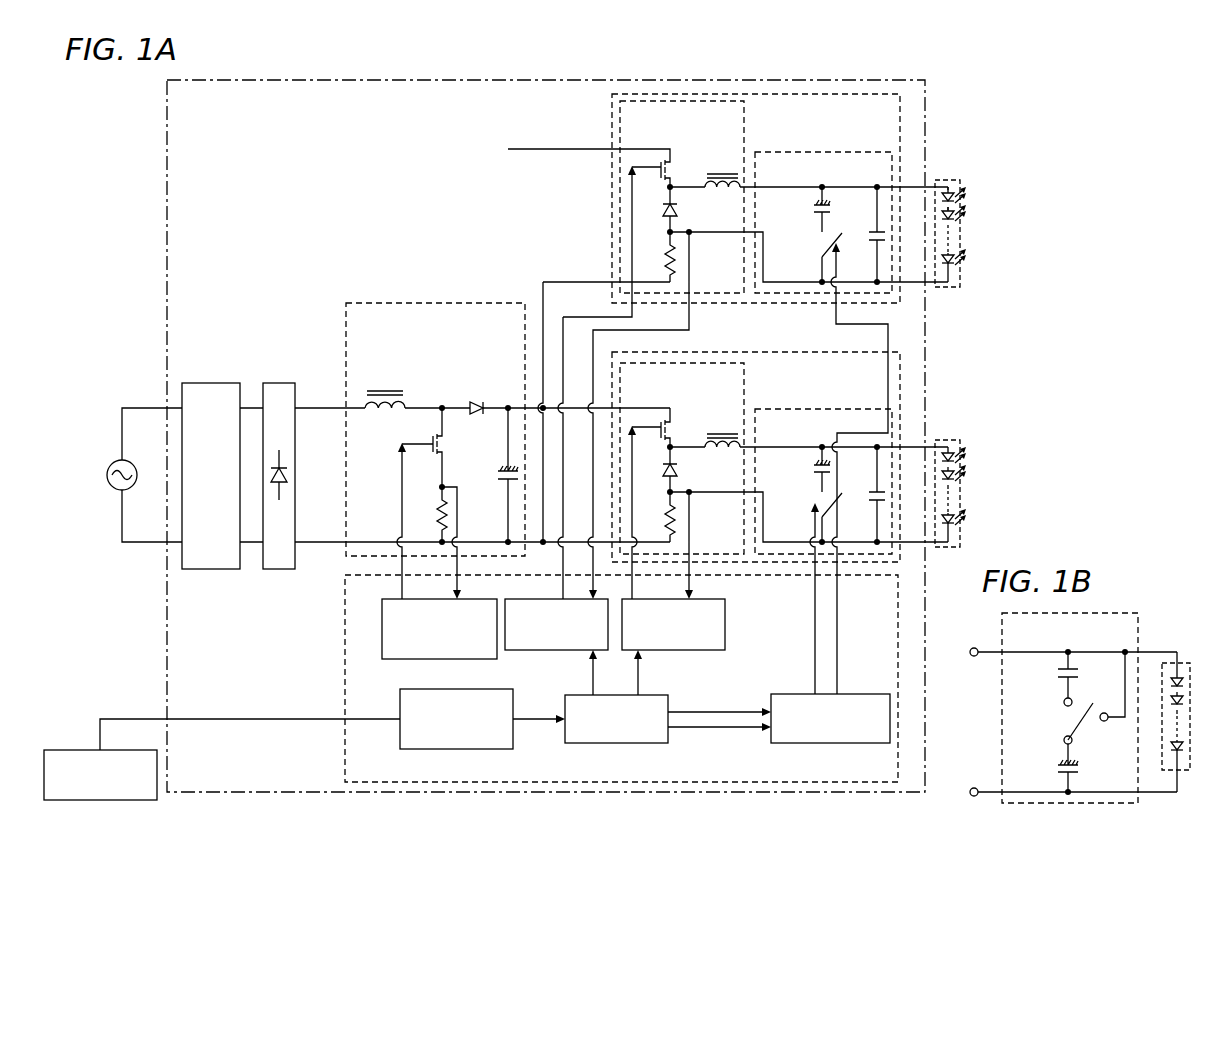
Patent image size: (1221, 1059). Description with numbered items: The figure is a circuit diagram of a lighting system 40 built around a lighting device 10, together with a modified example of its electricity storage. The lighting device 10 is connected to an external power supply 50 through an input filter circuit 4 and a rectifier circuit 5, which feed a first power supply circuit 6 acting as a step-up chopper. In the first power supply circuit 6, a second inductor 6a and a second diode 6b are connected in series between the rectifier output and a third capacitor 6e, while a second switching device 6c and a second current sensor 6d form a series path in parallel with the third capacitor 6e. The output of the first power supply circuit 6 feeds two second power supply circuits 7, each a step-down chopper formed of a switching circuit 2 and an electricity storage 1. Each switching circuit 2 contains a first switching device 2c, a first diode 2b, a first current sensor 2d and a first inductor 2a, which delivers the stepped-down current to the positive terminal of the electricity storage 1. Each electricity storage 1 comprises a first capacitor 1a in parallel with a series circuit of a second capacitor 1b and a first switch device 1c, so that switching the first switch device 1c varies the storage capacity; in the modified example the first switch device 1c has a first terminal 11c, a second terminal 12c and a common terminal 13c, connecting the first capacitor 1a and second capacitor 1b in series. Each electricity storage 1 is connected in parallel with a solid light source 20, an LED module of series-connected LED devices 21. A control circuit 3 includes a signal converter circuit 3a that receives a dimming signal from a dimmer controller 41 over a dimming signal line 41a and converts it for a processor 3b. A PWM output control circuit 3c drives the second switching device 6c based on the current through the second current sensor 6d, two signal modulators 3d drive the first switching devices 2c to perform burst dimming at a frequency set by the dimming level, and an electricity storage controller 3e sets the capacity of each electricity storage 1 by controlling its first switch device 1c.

In FIG. 1A, the lighting device 10 is at (553, 78).
In FIG. 1A, the lighting system 40 is at (955, 97).
In FIG. 1A, the external power supply 50 is at (114, 462).
In FIG. 1A, the input filter circuit 4 is at (216, 383).
In FIG. 1A, the rectifier circuit 5 is at (279, 383).
In FIG. 1A, the first power supply circuit 6 is at (428, 302).
In FIG. 1A, the second inductor 6a is at (385, 388).
In FIG. 1A, the second diode 6b is at (475, 394).
In FIG. 1A, the second switching device 6c is at (434, 503).
In FIG. 1A, the second current sensor 6d is at (437, 541).
In FIG. 1A, the third capacitor 6e is at (498, 475).
In FIG. 1A, the second power supply circuit 7 is at (812, 94).
In FIG. 1A, the switching circuit 2 is at (688, 94).
In FIG. 1A, the first inductor 2a is at (722, 300).
In FIG. 1A, the first diode 2b is at (660, 339).
In FIG. 1A, the first switching device 2c is at (603, 374).
In FIG. 1A, the first current sensor 2d is at (659, 387).
In FIG. 1A, the electricity storage 1 is at (893, 156).
In FIG. 1B, the electricity storage 1 is at (1126, 612).
In FIG. 1A, the first capacitor 1a is at (868, 364).
In FIG. 1B, the first capacitor 1a is at (1055, 675).
In FIG. 1A, the second capacitor 1b is at (808, 339).
In FIG. 1B, the second capacitor 1b is at (1055, 768).
In FIG. 1A, the first switch device 1c is at (842, 463).
In FIG. 1B, the first switch device 1c is at (1067, 721).
In FIG. 1B, the first terminal 11c is at (1063, 703).
In FIG. 1B, the second terminal 12c is at (1104, 722).
In FIG. 1B, the common terminal 13c is at (1063, 741).
In FIG. 1A, the solid light source 20 is at (958, 180).
In FIG. 1B, the solid light source 20 is at (1188, 663).
In FIG. 1A, the LED device 21 is at (955, 268).
In FIG. 1A, the control circuit 3 is at (343, 651).
In FIG. 1A, the signal converter circuit 3a is at (513, 738).
In FIG. 1A, the processor 3b is at (668, 739).
In FIG. 1A, the PWM output control circuit 3c is at (390, 660).
In FIG. 1A, the signal modulator 3d is at (532, 651).
In FIG. 1A, the electricity storage controller 3e is at (854, 694).
In FIG. 1A, the dimmer controller 41 is at (75, 750).
In FIG. 1A, the dimming signal line 41a is at (130, 718).